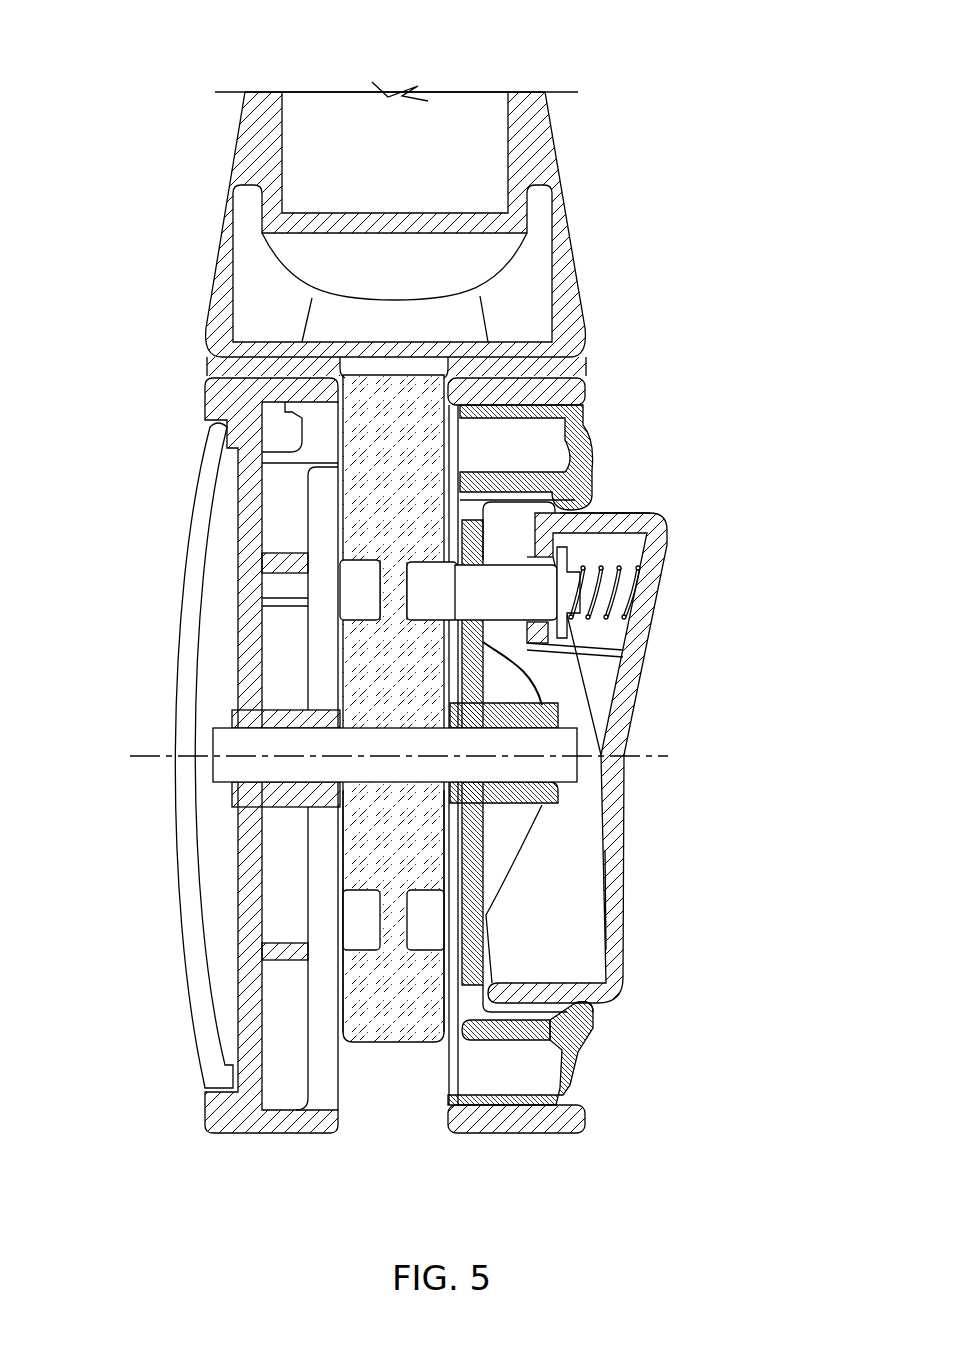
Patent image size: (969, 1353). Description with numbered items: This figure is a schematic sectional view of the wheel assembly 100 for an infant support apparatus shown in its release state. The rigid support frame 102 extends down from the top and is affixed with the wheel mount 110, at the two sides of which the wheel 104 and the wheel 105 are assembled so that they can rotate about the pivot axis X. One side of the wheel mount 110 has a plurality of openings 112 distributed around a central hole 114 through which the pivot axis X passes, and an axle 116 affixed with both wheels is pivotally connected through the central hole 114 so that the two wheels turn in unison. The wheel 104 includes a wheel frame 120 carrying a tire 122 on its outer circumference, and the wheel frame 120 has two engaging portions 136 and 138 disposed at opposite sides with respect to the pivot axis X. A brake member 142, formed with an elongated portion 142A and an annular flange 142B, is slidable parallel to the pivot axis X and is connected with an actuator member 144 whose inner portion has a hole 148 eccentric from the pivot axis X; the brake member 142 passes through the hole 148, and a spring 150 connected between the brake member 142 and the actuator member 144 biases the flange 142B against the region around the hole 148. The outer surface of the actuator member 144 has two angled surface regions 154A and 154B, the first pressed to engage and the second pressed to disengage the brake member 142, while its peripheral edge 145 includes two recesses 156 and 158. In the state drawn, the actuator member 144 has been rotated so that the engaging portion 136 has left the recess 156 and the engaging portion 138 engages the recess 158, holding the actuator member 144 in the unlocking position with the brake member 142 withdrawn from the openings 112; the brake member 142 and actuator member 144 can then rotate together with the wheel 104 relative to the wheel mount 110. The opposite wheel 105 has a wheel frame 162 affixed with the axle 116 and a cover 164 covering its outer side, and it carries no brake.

The wheel assembly 100 is at (838, 45).
The support frame 102 is at (250, 132).
The wheel 104 is at (582, 774).
The wheel 105 is at (193, 774).
The wheel mount 110 is at (408, 771).
The openings 112 is at (398, 593).
The central hole 114 is at (405, 792).
The axle 116 is at (217, 742).
The wheel frame 120 is at (588, 423).
The tire 122 is at (518, 1128).
The engaging portion 136 is at (575, 503).
The engaging portion 138 is at (585, 1035).
The brake member 142 is at (638, 598).
The elongated portion 142A is at (490, 617).
The flange 142B is at (567, 543).
The actuator member 144 is at (616, 879).
The peripheral edge 145 is at (655, 515).
The hole 148 is at (431, 584).
The spring 150 is at (612, 580).
The surface region 154A is at (578, 633).
The surface region 154B is at (626, 908).
The recess 156 is at (617, 508).
The recess 158 is at (600, 1018).
The wheel frame 162 is at (245, 1013).
The cover 164 is at (190, 912).
The pivot axis X is at (647, 756).